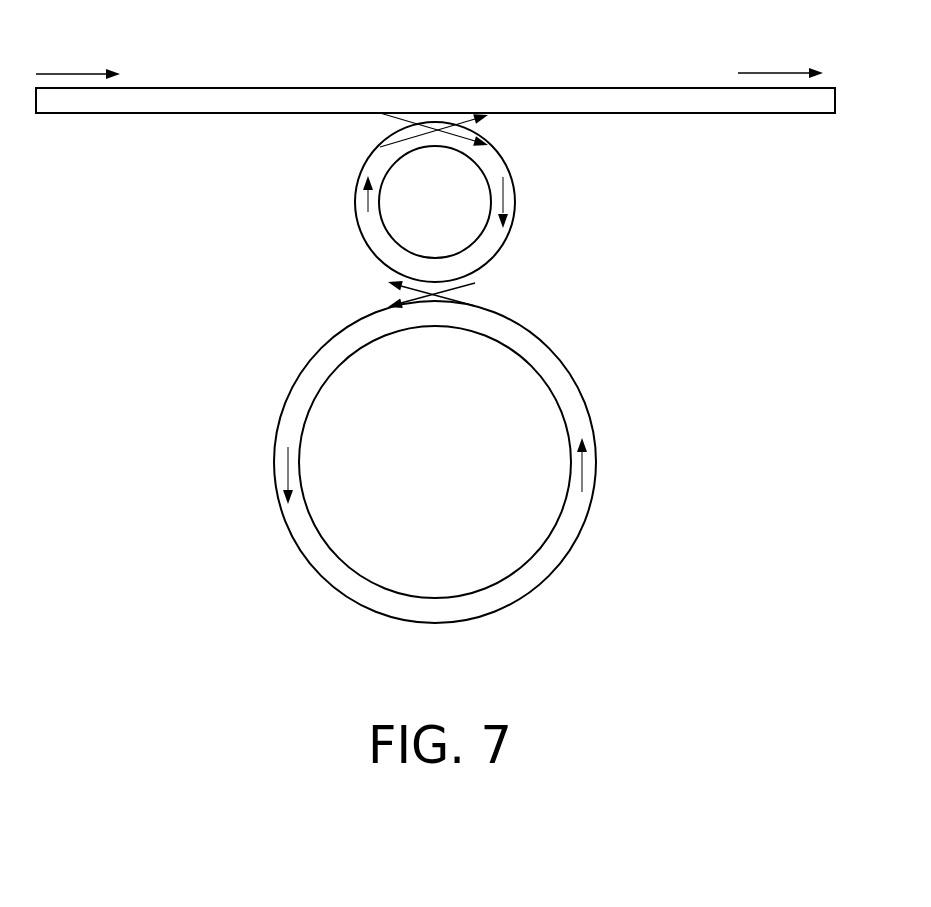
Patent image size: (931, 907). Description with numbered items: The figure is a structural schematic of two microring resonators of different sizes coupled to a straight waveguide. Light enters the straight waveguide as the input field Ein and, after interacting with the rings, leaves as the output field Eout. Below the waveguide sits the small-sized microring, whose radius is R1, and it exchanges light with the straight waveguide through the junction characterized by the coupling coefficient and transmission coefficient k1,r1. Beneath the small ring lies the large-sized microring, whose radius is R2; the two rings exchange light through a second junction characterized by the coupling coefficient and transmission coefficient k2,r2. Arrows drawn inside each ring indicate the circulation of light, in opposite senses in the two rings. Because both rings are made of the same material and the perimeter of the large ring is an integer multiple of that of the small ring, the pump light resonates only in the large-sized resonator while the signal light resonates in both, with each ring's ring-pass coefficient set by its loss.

The input light field Ein is at (78, 58).
The output light field Eout is at (780, 58).
The coupling coefficient and transmission coefficient between the straight waveguide k1,r1 is at (481, 134).
The coupling coefficient and transmission coefficient between the small-sized micror k2,r2 is at (487, 287).
The small-sized microring resonator radius R1 is at (433, 203).
The large-sized microring resonator radius R2 is at (528, 563).